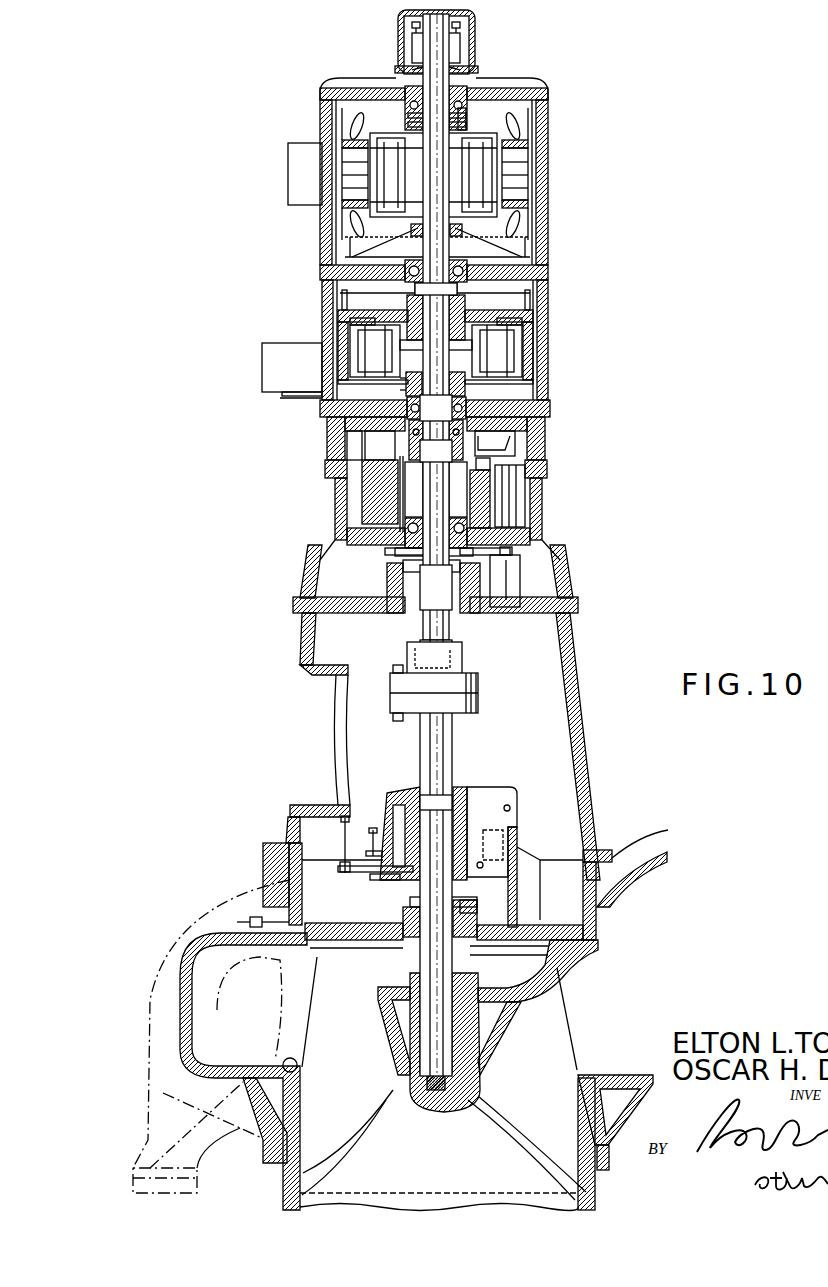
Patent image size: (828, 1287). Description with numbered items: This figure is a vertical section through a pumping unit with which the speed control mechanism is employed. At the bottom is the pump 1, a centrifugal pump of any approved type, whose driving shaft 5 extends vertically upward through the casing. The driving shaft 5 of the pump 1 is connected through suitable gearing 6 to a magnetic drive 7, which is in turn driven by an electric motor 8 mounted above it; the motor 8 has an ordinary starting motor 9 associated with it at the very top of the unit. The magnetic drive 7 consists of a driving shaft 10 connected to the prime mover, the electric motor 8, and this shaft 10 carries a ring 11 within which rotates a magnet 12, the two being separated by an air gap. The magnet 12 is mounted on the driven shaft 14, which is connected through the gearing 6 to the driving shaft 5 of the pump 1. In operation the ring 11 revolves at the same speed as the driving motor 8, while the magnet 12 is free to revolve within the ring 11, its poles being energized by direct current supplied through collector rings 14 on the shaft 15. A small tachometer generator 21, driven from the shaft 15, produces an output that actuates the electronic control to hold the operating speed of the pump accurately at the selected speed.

The pump 1 is at (283, 998).
The driving shaft 5 is at (437, 750).
The gearing 6 is at (397, 497).
The magnetic drive 7 is at (540, 363).
The electric motor 8 is at (520, 155).
The starting motor 9 is at (452, 50).
The driving shaft 10 is at (440, 243).
The ring 11 is at (352, 360).
The magnet 12 is at (375, 338).
The driven shaft 14 is at (465, 382).
The shaft 15 is at (440, 410).
The tachometer generator 21 is at (277, 377).